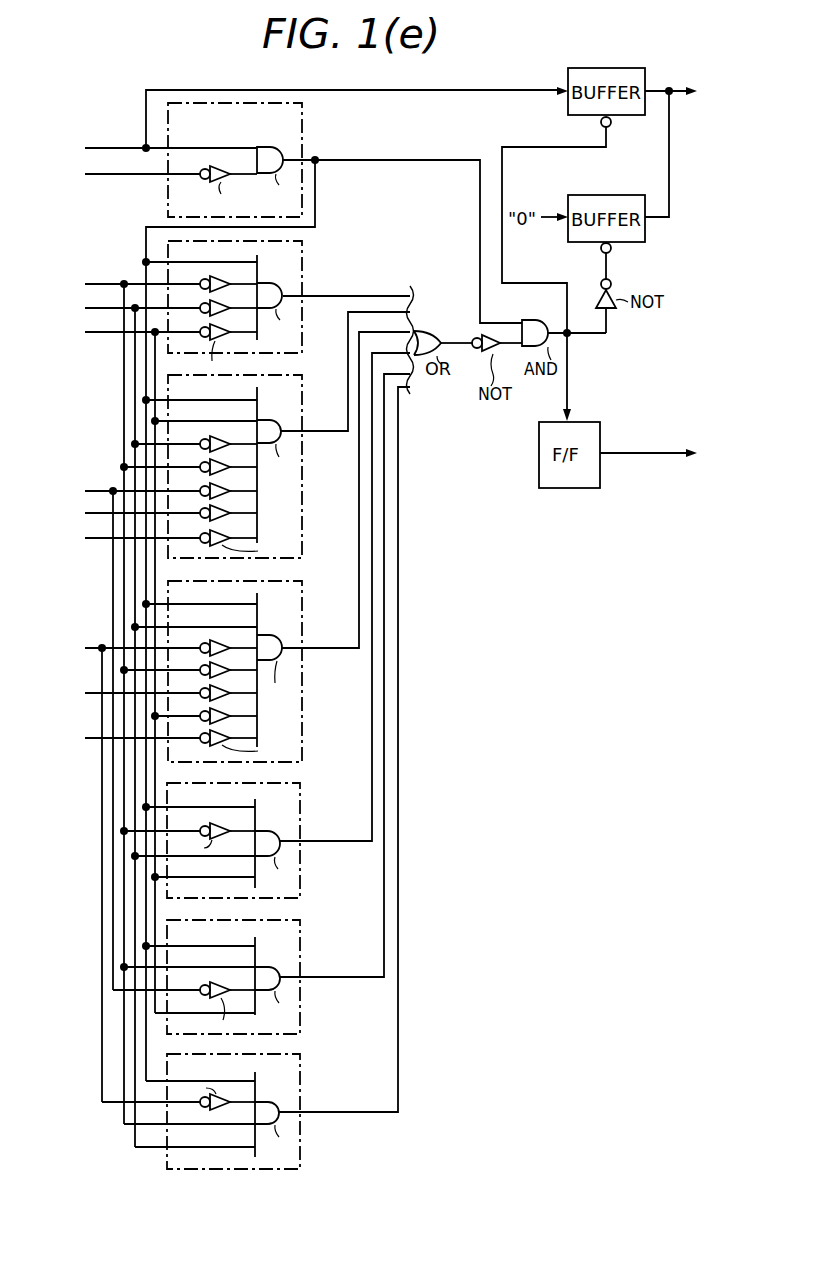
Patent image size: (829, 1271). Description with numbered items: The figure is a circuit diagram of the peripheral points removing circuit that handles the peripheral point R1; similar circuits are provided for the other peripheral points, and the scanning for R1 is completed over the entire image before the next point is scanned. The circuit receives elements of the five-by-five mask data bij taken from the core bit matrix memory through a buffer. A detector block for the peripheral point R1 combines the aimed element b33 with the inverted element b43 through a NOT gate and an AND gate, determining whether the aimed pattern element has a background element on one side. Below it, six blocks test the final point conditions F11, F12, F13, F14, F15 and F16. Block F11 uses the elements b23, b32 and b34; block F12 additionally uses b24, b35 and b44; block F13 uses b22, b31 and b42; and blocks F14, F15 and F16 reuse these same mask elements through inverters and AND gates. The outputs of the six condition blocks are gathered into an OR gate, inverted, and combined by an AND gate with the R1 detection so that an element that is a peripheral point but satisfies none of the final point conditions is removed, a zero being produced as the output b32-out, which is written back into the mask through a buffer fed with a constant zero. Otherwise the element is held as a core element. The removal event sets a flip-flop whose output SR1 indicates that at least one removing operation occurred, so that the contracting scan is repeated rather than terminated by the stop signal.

The peripheral point R1 is at (302, 112).
The final point condition F11 is at (302, 249).
The final point condition F12 is at (259, 435).
The final point condition F13 is at (302, 588).
The final point condition F14 is at (334, 788).
The final point condition F15 is at (302, 957).
The final point condition F16 is at (302, 1070).
The matrix data element b33 is at (152, 150).
The matrix data element b43 is at (123, 176).
The matrix data element b23 is at (123, 286).
The matrix data element b32 is at (123, 310).
The matrix data element b34 is at (123, 334).
The matrix data element b24 is at (123, 493).
The matrix data element b35 is at (123, 515).
The matrix data element b44 is at (123, 540).
The matrix data element b22 is at (122, 650).
The matrix data element b31 is at (122, 695).
The matrix data element b42 is at (122, 740).
The removing signal SR1 is at (666, 456).
The output b32 b32-out is at (689, 94).